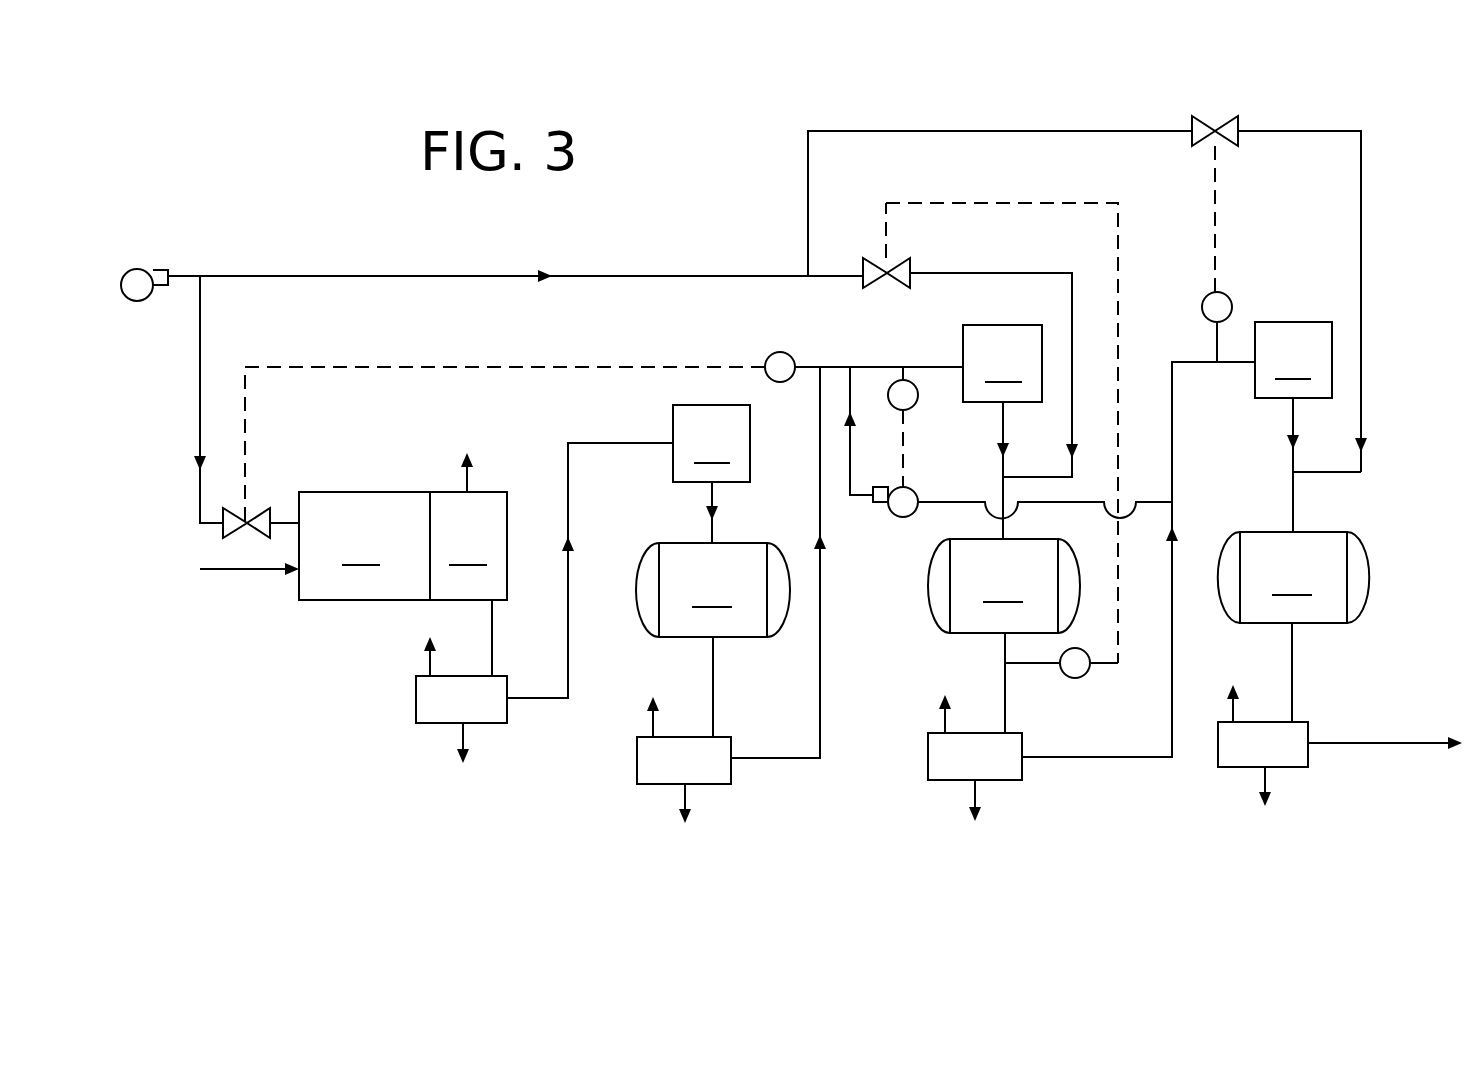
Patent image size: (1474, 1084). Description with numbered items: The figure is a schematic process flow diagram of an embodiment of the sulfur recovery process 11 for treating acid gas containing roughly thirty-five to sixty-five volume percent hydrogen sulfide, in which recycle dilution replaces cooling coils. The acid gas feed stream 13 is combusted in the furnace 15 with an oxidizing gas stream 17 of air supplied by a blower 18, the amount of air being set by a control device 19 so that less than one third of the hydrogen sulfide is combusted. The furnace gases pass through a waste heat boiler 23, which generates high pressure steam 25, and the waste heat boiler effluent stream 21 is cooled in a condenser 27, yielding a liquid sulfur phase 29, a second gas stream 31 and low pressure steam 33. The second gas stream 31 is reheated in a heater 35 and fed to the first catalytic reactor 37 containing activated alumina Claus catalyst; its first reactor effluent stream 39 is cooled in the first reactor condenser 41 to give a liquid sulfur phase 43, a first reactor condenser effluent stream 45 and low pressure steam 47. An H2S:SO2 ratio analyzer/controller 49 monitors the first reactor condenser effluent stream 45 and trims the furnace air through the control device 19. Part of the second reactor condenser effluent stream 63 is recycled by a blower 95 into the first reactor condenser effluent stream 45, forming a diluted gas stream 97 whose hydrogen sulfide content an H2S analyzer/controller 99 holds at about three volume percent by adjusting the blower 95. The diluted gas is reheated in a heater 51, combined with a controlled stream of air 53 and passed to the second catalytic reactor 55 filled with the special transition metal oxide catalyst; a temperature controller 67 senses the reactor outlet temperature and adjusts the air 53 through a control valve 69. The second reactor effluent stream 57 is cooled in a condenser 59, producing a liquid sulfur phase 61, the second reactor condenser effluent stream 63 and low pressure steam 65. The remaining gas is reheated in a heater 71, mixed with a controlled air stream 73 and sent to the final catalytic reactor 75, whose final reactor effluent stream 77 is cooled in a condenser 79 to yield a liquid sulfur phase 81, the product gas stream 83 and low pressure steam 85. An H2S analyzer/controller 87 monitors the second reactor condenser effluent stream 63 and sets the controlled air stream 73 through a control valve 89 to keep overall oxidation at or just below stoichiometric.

The sulfur recovery process 11 is at (298, 163).
The acid gas feed stream 13 is at (240, 572).
The furnace 15 is at (364, 546).
The oxidizing gas stream 17 is at (200, 408).
The blower 18 is at (137, 269).
The control device 19 is at (226, 535).
The waste heat boiler effluent stream 21 is at (495, 642).
The waste heat boiler 23 is at (468, 546).
The high pressure steam 25 is at (467, 450).
The condenser 27 is at (416, 698).
The liquid sulfur phase 29 is at (452, 755).
The second gas stream 31 is at (612, 440).
The low pressure steam 33 is at (424, 645).
The heater 35 is at (711, 474).
The first catalytic reactor 37 is at (713, 590).
The first reactor effluent stream 39 is at (718, 681).
The first reactor condenser 41 is at (637, 765).
The liquid sulfur phase 43 is at (675, 815).
The first reactor condenser effluent stream 45 is at (768, 759).
The low pressure steam 47 is at (645, 707).
The H2S:SO2 ratio analyzer/controller 49 is at (778, 352).
The heater 51 is at (1002, 432).
The controlled stream of air 53 is at (1047, 270).
The second catalytic reactor 55 is at (1004, 586).
The second reactor effluent stream 57 is at (1007, 702).
The condenser 59 is at (928, 757).
The liquid sulfur phase 61 is at (965, 813).
The second reactor condenser effluent stream 63 is at (1088, 757).
The low pressure steam 65 is at (937, 703).
The temperature controller 67 is at (1073, 677).
The control valve 69 is at (863, 262).
The heater 71 is at (1308, 427).
The controlled air stream 73 is at (1361, 185).
The final catalytic reactor 75 is at (1293, 577).
The final reactor effluent stream 77 is at (1297, 667).
The condenser 79 is at (1287, 767).
The liquid sulfur phase 81 is at (1255, 797).
The product gas stream 83 is at (1398, 740).
The low pressure steam 85 is at (1229, 708).
The H2S analyzer/controller 87 is at (1201, 307).
The control valve 89 is at (1192, 120).
The blower 95 is at (878, 505).
The diluted gas stream 97 is at (940, 363).
The H2S analyzer/controller 99 is at (910, 402).